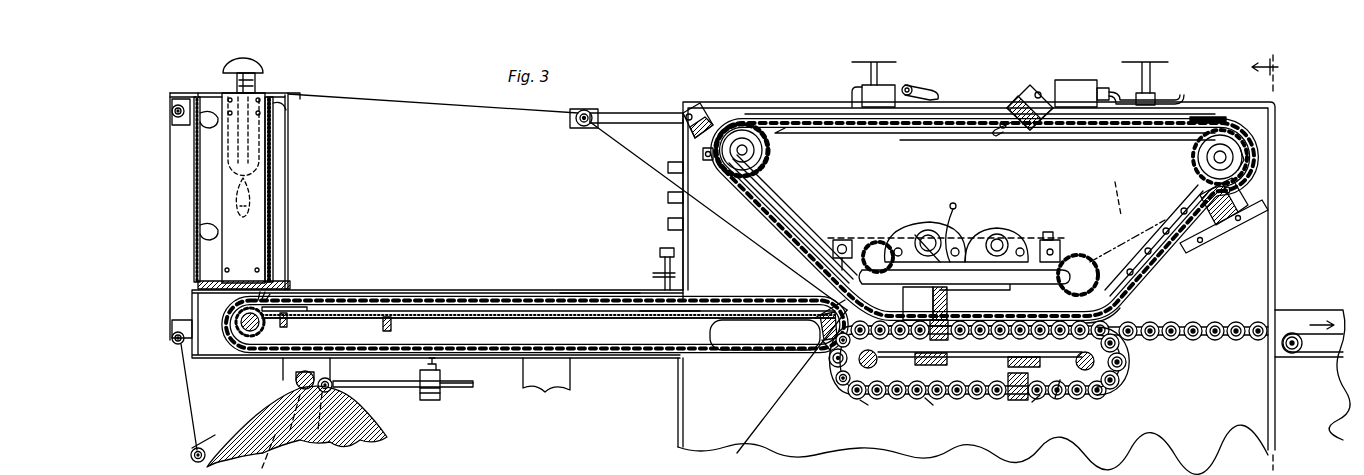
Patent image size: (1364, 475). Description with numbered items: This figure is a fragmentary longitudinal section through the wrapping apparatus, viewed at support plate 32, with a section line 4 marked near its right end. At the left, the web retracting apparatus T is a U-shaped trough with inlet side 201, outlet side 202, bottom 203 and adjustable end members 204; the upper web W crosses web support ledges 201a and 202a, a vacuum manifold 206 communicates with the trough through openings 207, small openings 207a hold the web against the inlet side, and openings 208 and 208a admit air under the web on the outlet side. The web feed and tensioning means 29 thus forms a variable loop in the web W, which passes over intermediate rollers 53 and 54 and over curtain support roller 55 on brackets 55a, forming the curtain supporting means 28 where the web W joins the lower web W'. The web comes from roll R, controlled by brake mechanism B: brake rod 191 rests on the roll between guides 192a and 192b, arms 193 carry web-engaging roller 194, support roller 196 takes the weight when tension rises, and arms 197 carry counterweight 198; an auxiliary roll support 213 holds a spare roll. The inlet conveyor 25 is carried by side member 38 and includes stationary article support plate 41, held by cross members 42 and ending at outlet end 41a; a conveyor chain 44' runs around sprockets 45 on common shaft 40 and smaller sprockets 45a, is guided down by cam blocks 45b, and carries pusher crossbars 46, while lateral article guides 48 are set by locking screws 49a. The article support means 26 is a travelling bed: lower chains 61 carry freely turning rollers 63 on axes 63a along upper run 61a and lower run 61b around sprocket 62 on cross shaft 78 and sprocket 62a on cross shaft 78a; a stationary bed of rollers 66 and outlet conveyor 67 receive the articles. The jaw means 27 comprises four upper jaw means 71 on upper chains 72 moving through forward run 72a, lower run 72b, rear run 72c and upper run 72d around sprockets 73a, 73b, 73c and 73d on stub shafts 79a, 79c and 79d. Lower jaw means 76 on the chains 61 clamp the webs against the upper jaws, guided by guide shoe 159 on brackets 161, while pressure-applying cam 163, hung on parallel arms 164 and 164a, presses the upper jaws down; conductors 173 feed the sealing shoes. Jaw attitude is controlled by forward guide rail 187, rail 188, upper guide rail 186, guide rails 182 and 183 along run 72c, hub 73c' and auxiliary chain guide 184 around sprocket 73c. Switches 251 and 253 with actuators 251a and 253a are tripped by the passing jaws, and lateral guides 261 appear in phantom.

The web tensioning and retracting apparatus T is at (207, 72).
The web support ledge 201a is at (205, 95).
The intermediate roller 54 is at (172, 113).
The vacuum manifold 206 is at (200, 165).
The small openings 207a is at (200, 125).
The openings 207 is at (200, 230).
The inlet side 201 is at (218, 193).
The end members 204 is at (260, 165).
The openings 208 is at (275, 128).
The additional openings 208a is at (286, 105).
The outlet side 202 is at (290, 232).
The web support ledge 202a is at (292, 95).
The bottom 203 is at (285, 281).
The web feed and tensioning means 29 is at (274, 78).
The intermediate roller 53 is at (172, 338).
The arms 193 is at (192, 445).
The web-engaging roller 194 is at (193, 462).
The roll R is at (345, 442).
The guide 192b is at (276, 434).
The brake mechanism B is at (259, 394).
The brake rod 191 is at (308, 371).
The support roller 196 is at (332, 383).
The guide 192a is at (360, 392).
The counterweight 198 is at (430, 401).
The arms 197 is at (461, 393).
The side member 38 is at (497, 337).
The crossbars 46 is at (405, 296).
The common shaft 40 is at (240, 318).
The sprockets 45 is at (245, 333).
The lateral article guides 48 is at (462, 311).
The inlet conveyor 25 is at (541, 286).
The guide 44' is at (600, 274).
The locking screws 49a is at (660, 272).
The article support plate 41 is at (538, 319).
The cross members 42 is at (692, 323).
The outlet end 41a is at (828, 297).
The sprockets 45a is at (820, 330).
The guides 45b is at (738, 350).
The auxiliary roll support 213 is at (560, 375).
The web W is at (567, 202).
The web W' is at (786, 381).
The curtain support roller 55 is at (581, 128).
The curtain supporting means 28 is at (561, 130).
The brackets 55a is at (634, 113).
The support plate 32 is at (1182, 435).
The outlet conveyor 67 is at (1316, 360).
The section line 4 is at (1274, 265).
The forward guide rail 187 is at (715, 200).
The upper chains 72 is at (924, 139).
The upper run 72d is at (1075, 130).
The stub shaft 79d is at (743, 150).
The sprocket 73d is at (770, 157).
The upper jaw means 71 is at (693, 157).
The forward run 72a is at (778, 228).
The rail 188 is at (793, 238).
The stub shaft 79c is at (1220, 157).
The sprocket 73c is at (1191, 157).
The hub 73c' is at (1279, 159).
The auxiliary chain guide 184 is at (1255, 133).
The guide rail 182 is at (1170, 224).
The guide rail 183 is at (1212, 246).
The rear run 72c is at (1192, 262).
The stub shaft 79a is at (1115, 306).
The lower run 72b is at (1046, 318).
The switch 253 is at (900, 85).
The actuator 253a is at (932, 92).
The switch 251 is at (1080, 80).
The actuator 251a is at (1020, 90).
The upper guide rail 186 is at (1035, 135).
The arm 164 is at (924, 232).
The arm 164a is at (1006, 233).
The pressure-applying cam 163 is at (1045, 240).
The conductors 173 is at (950, 205).
The jaw means 27 is at (987, 229).
The sprocket 73a is at (864, 245).
The sprocket 73b is at (1072, 250).
The lateral guides 261 is at (1127, 212).
The lower jaw means 76 is at (946, 350).
The lower chains 61 is at (905, 400).
The stationary bed of rollers 66 is at (1195, 322).
The sprocket 62 is at (862, 390).
The sprocket 62a is at (1095, 375).
The cross shaft 78 is at (832, 366).
The cross shaft 78a is at (1095, 360).
The upper run 61a is at (988, 340).
The roller axes 63a is at (1032, 405).
The rollers 63 is at (1036, 401).
The lower run 61b is at (1060, 400).
The guide shoe 159 is at (863, 406).
The brackets 161 is at (926, 400).
The article support means 26 is at (986, 412).